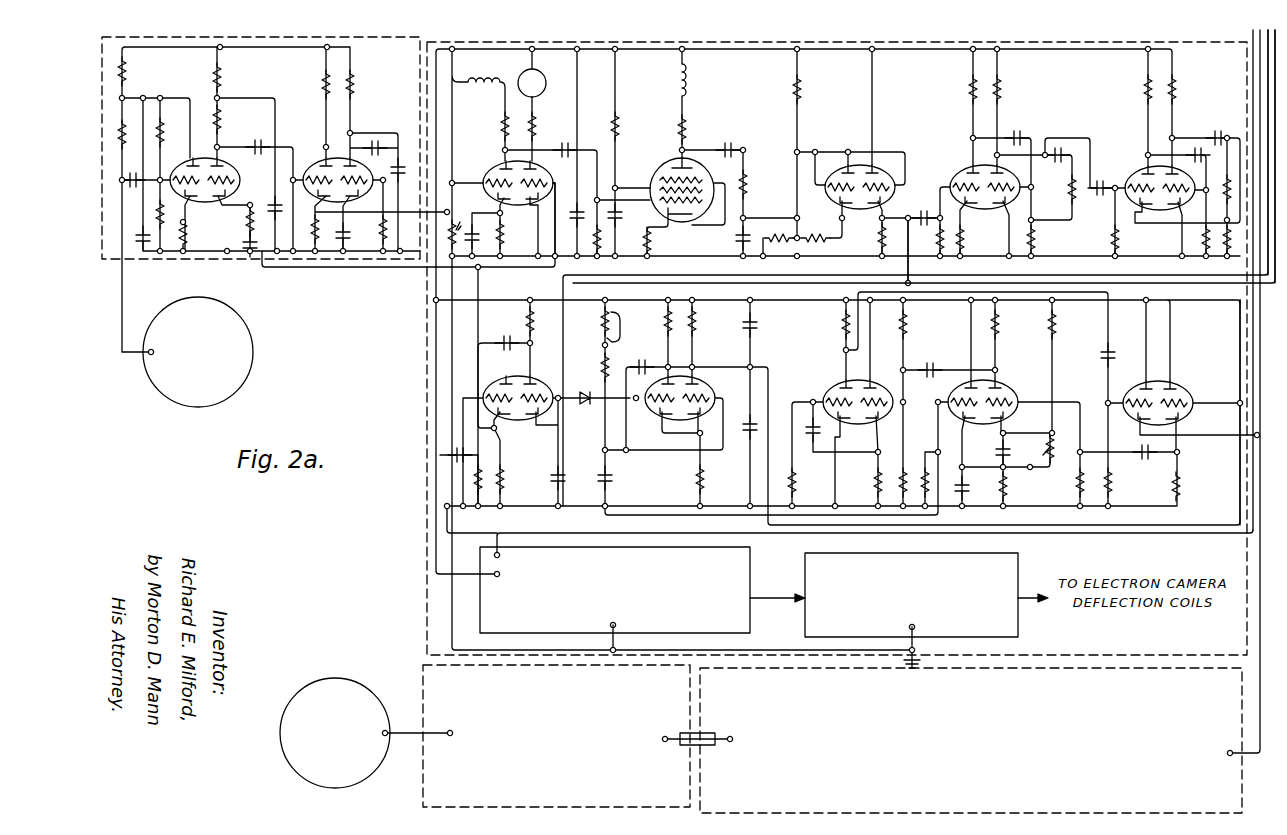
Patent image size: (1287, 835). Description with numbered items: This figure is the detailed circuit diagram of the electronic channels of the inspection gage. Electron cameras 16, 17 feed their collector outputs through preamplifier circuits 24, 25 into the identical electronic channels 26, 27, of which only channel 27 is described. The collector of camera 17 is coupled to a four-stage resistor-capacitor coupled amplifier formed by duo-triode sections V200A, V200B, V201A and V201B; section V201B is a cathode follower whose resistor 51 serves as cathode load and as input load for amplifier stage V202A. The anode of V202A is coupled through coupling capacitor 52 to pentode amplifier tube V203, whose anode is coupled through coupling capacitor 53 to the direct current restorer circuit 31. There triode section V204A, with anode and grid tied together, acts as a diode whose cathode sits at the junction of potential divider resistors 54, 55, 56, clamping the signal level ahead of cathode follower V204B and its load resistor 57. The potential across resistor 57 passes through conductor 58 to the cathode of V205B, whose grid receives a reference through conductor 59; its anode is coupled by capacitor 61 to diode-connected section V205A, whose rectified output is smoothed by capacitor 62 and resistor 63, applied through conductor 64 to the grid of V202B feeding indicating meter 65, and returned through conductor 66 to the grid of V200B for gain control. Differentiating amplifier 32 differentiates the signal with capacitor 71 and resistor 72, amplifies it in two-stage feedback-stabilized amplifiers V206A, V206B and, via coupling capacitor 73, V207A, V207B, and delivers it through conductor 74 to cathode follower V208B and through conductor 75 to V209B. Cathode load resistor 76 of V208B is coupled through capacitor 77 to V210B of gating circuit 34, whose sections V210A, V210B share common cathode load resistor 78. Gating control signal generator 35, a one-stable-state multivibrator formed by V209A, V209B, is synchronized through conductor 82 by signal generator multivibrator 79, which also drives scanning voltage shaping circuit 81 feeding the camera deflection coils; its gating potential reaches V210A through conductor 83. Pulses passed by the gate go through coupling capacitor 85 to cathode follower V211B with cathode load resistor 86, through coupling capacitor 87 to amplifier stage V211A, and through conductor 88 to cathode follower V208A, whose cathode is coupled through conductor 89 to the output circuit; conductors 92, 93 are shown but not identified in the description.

The electron camera 16 is at (328, 678).
The electron camera 17 is at (253, 352).
The preamplifier circuit 24 is at (563, 670).
The preamplifier circuit 25 is at (268, 40).
The electronic channel 26 is at (800, 672).
The electronic channel 27 is at (905, 45).
The amplifier and direct current restorer circuit 31 is at (834, 98).
The differentiating amplifier 32 is at (938, 73).
The gating circuit 34 is at (952, 323).
The gating control signal generator 35 is at (796, 323).
The resistor 51 is at (458, 222).
The coupling capacitor 52 is at (565, 140).
The coupling capacitor 53 is at (728, 142).
The resistor 54 is at (792, 90).
The resistor 55 is at (815, 228).
The resistor 56 is at (778, 228).
The cathode load resistor 57 is at (876, 240).
The conductor 58 is at (856, 282).
The conductor 59 is at (722, 276).
The coupling capacitor 61 is at (507, 336).
The capacitor 62 is at (440, 457).
The resistor 63 is at (470, 482).
The conductor 64 is at (555, 246).
The indicating meter 65 is at (545, 80).
The conductor 66 is at (1253, 62).
The capacitor 71 is at (924, 226).
The resistor 72 is at (920, 250).
The coupling capacitor 73 is at (1100, 197).
The conductor 74 is at (1242, 333).
The conductor 75 is at (1182, 535).
The cathode load resistor 76 is at (1172, 486).
The coupling capacitor 77 is at (1138, 450).
The common cathode load resistor 78 is at (1010, 489).
The signal generator multivibrator 79 is at (750, 574).
The scanning voltage shaping circuit 81 is at (805, 617).
The conductor 82 is at (540, 533).
The conductor 83 is at (755, 495).
The coupling capacitor 85 is at (930, 362).
The cathode load resistor 86 is at (872, 482).
The coupling capacitor 87 is at (808, 430).
The conductor 88 is at (1062, 297).
The conductor 89 is at (1260, 74).
The conductor 92 is at (1170, 282).
The conductor 93 is at (1268, 88).
The triode section V200A is at (198, 166).
The triode section V200B is at (256, 166).
The triode section V201A is at (315, 160).
The triode section V201B is at (366, 220).
The triode section V202A is at (488, 170).
The triode section V202B is at (518, 218).
The pentode amplifier tube V203 is at (655, 175).
The triode section V204A is at (843, 164).
The triode section V204B is at (893, 200).
The triode section V205A is at (503, 376).
The triode section V205B is at (528, 420).
The triode section V206A is at (963, 170).
The triode section V206B is at (996, 232).
The triode section V207A is at (1135, 168).
The triode section V207B is at (1175, 212).
The triode section V208A is at (1122, 396).
The triode section V208B is at (1180, 390).
The triode section V209A is at (653, 418).
The triode section V209B is at (708, 393).
The triode section V210A is at (952, 392).
The triode section V210B is at (1008, 390).
The triode section V211A is at (826, 392).
The triode section V211B is at (873, 421).